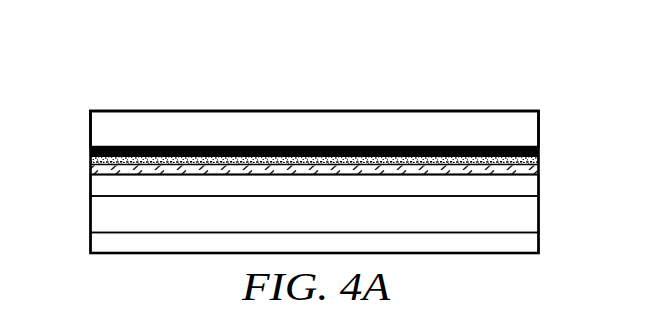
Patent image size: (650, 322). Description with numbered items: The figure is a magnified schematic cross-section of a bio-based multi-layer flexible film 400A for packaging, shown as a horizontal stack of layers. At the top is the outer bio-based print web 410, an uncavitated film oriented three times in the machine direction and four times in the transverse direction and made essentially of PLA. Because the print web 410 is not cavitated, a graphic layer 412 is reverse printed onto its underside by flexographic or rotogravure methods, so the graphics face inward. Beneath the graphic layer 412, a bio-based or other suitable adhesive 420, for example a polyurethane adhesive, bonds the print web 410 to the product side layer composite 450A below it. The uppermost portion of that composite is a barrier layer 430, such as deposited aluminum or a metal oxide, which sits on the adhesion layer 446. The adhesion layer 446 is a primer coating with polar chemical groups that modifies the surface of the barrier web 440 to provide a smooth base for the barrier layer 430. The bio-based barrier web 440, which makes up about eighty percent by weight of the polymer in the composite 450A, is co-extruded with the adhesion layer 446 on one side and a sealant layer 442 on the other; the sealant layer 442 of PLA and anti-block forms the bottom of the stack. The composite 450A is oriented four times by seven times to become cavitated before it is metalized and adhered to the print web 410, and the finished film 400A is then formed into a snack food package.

The multi-layer flexible film 400A is at (210, 69).
The print web 410 is at (90, 132).
The graphic layer 412 is at (539, 148).
The adhesive 420 is at (539, 162).
The barrier layer 430 is at (539, 169).
The adhesion layer 446 is at (539, 185).
The barrier web 440 is at (539, 212).
The sealant layer 442 is at (538, 243).
The product side layer composite 450A is at (78, 177).